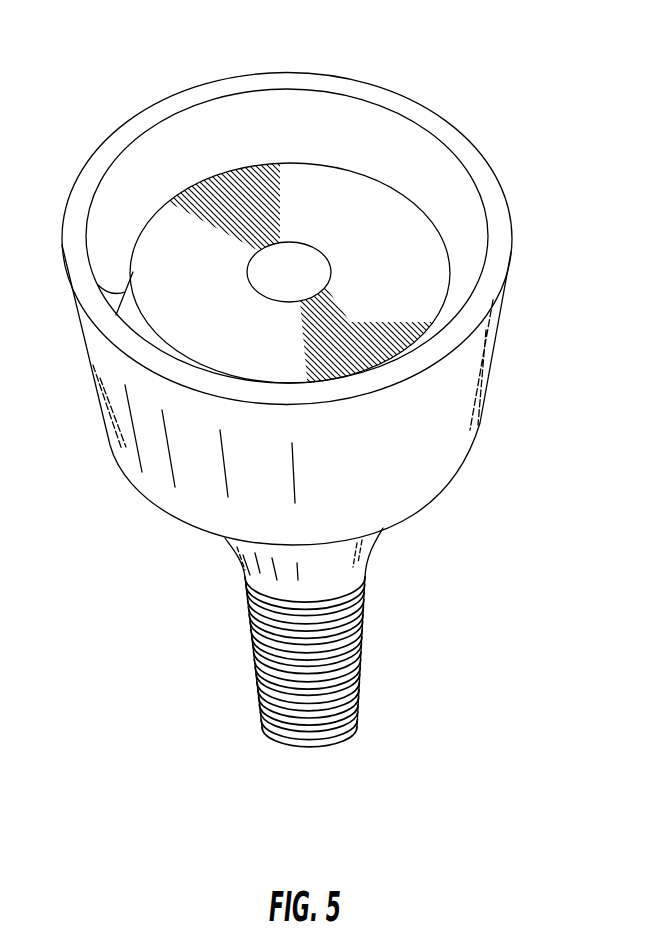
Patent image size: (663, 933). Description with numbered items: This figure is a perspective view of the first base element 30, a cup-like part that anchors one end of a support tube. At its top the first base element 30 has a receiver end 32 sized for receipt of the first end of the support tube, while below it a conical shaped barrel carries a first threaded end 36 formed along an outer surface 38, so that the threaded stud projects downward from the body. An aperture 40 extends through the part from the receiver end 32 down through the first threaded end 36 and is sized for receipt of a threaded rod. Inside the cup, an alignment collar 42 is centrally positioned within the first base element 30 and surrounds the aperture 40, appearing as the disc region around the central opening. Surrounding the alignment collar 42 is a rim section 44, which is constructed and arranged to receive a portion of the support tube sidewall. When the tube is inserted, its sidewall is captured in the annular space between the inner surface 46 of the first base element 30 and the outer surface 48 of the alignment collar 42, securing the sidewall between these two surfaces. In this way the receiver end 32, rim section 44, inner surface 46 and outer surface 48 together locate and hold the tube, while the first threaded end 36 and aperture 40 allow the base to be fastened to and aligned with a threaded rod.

The first base element 30 is at (558, 362).
The receiver end 32 is at (505, 188).
The first threaded end 36 is at (377, 688).
The outer surface 38 is at (368, 548).
The aperture 40 is at (322, 240).
The alignment collar 42 is at (402, 283).
The rim section 44 is at (278, 147).
The inner surface 46 is at (187, 134).
The outer surface 48 is at (98, 285).